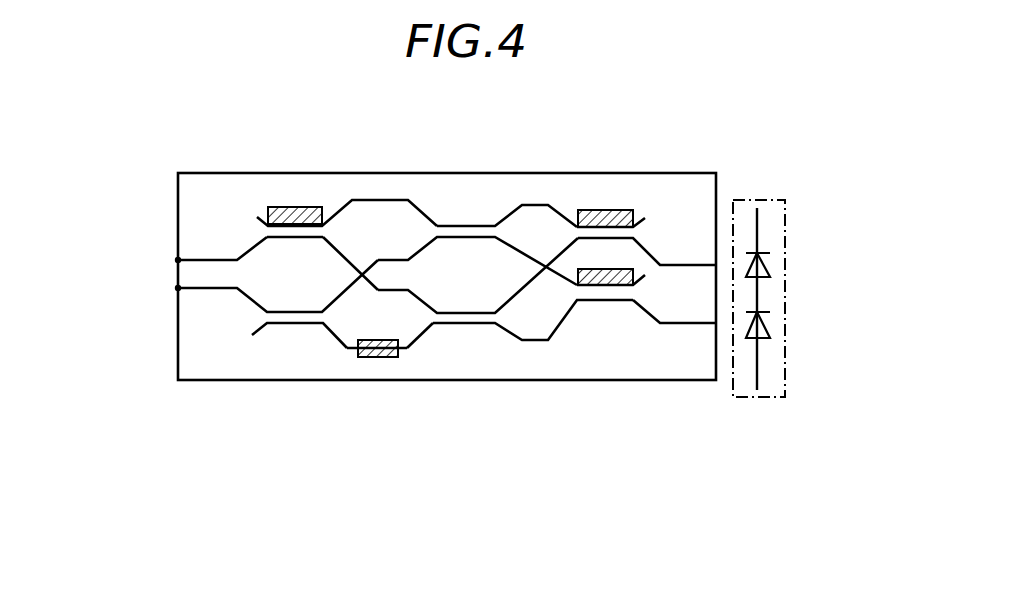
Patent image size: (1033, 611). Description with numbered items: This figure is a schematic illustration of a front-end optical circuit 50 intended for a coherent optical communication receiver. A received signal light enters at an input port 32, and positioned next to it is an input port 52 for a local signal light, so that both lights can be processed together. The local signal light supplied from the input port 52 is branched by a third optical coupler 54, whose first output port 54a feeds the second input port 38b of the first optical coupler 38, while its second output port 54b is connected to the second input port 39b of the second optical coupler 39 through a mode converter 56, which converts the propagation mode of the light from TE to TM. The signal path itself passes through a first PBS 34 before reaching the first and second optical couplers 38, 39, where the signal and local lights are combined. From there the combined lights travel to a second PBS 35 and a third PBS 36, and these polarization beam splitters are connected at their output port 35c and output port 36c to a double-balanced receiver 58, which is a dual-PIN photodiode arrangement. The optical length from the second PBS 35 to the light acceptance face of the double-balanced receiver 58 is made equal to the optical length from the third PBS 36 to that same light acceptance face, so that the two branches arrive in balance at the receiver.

The front-end optical circuit 50 is at (166, 206).
The input port 32 is at (178, 260).
The input port for a local signal light 52 is at (178, 288).
The third optical coupler 54 is at (280, 332).
The first output port 54a is at (322, 311).
The second output port 54b is at (320, 327).
The mode converter 56 is at (378, 358).
The first PBS 34 is at (288, 199).
The first optical coupler 38 is at (465, 216).
The second input port 38b is at (437, 237).
The second optical coupler 39 is at (473, 334).
The second input port 39b is at (437, 327).
The second PBS 35 is at (612, 200).
The output port 35c is at (660, 263).
The third PBS 36 is at (605, 296).
The output port 36c is at (632, 303).
The double-balanced receiver 58 is at (777, 397).